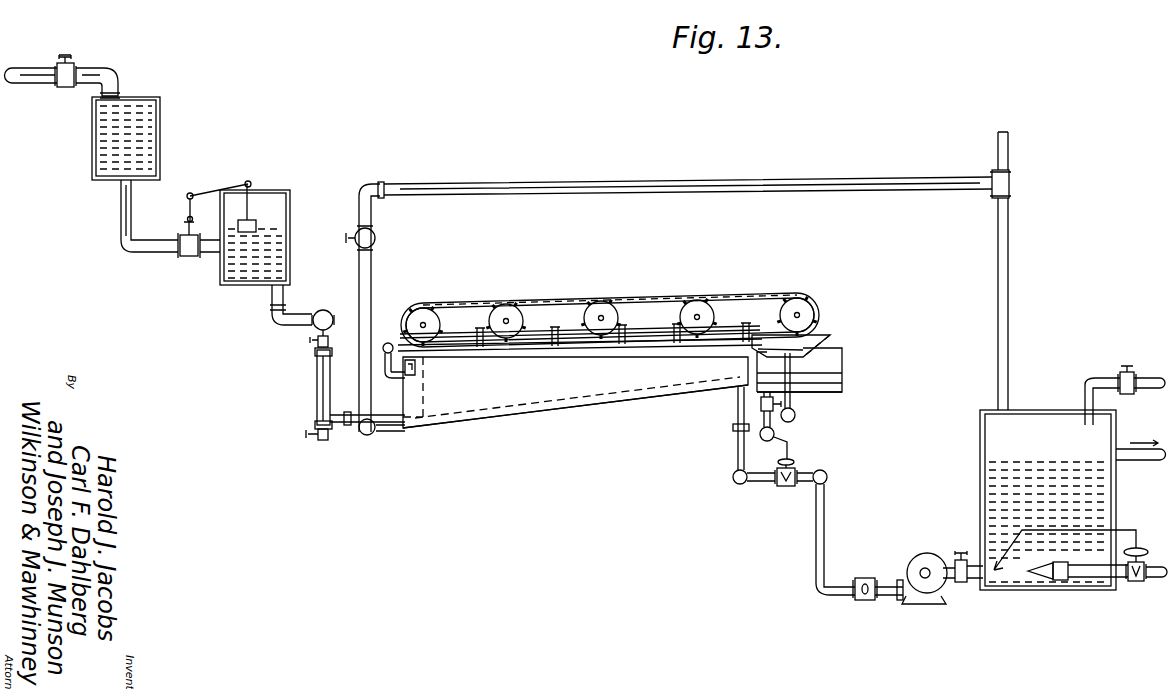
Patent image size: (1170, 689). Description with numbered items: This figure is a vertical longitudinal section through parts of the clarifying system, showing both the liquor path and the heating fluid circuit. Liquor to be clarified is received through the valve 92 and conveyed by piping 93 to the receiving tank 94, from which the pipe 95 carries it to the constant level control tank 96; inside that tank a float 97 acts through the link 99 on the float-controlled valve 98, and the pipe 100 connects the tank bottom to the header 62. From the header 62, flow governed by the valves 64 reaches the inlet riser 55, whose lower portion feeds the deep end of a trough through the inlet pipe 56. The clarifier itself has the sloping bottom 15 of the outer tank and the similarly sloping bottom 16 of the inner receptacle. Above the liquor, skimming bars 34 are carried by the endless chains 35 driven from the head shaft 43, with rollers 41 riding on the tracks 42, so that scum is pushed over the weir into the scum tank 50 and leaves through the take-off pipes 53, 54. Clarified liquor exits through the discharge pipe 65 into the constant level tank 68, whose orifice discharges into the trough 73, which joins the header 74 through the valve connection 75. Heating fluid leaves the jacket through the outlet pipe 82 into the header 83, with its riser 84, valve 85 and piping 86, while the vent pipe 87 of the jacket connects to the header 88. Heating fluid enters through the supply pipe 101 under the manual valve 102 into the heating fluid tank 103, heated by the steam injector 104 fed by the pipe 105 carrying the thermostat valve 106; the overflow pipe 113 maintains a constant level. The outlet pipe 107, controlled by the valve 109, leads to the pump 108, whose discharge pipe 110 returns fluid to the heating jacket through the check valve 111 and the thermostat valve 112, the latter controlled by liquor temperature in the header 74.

The sloping bottom of outer tank 15 is at (540, 414).
The sloping bottom of inner tank 16 is at (529, 402).
The skimming bars 34 is at (680, 352).
The endless chains 35 is at (567, 302).
The rollers 41 is at (681, 334).
The tracks 42 is at (645, 332).
The drive or head shaft 43 is at (798, 312).
The scum depository or tank 50 is at (802, 345).
The take-off pipe 53 is at (796, 400).
The take-off pipe 54 is at (796, 415).
The inlet riser 55 is at (316, 399).
The inlet pipe 56 is at (386, 424).
The header 62 is at (322, 310).
The valve 64 is at (315, 339).
The discharge pipe 65 is at (838, 373).
The constant level tank 68 is at (841, 353).
The discharge trough 73 is at (843, 388).
The header 74 is at (760, 437).
The valve connection 75 is at (737, 406).
The heating fluid outlet pipe 82 is at (397, 432).
The header 83 is at (364, 434).
The riser 84 is at (372, 262).
The valve 85 is at (374, 240).
The piping 86 is at (472, 186).
The vent pipe 87 is at (403, 376).
The header 88 is at (390, 342).
The valve 92 is at (69, 66).
The piping 93 is at (98, 68).
The receiving vessel or tank 94 is at (92, 136).
The pipe 95 is at (120, 212).
The constant level control tank 96 is at (291, 192).
The float 97 is at (253, 220).
The float-controlled valve 98 is at (185, 257).
The link 99 is at (206, 191).
The pipe 100 is at (276, 328).
The supply pipe 101 is at (1148, 377).
The valve 102 is at (1125, 378).
The heating fluid receiving tank 103 is at (982, 437).
The steam injector or heater 104 is at (1085, 579).
The pipe 105 is at (1158, 581).
The thermostat valve 106 is at (1133, 583).
The outlet pipe 107 is at (975, 582).
The pump 108 is at (920, 553).
The valve 109 is at (958, 590).
The pipe 110 is at (815, 518).
The check valve 111 is at (862, 601).
The thermostat valve 112 is at (797, 470).
The overflow pipe 113 is at (1140, 462).